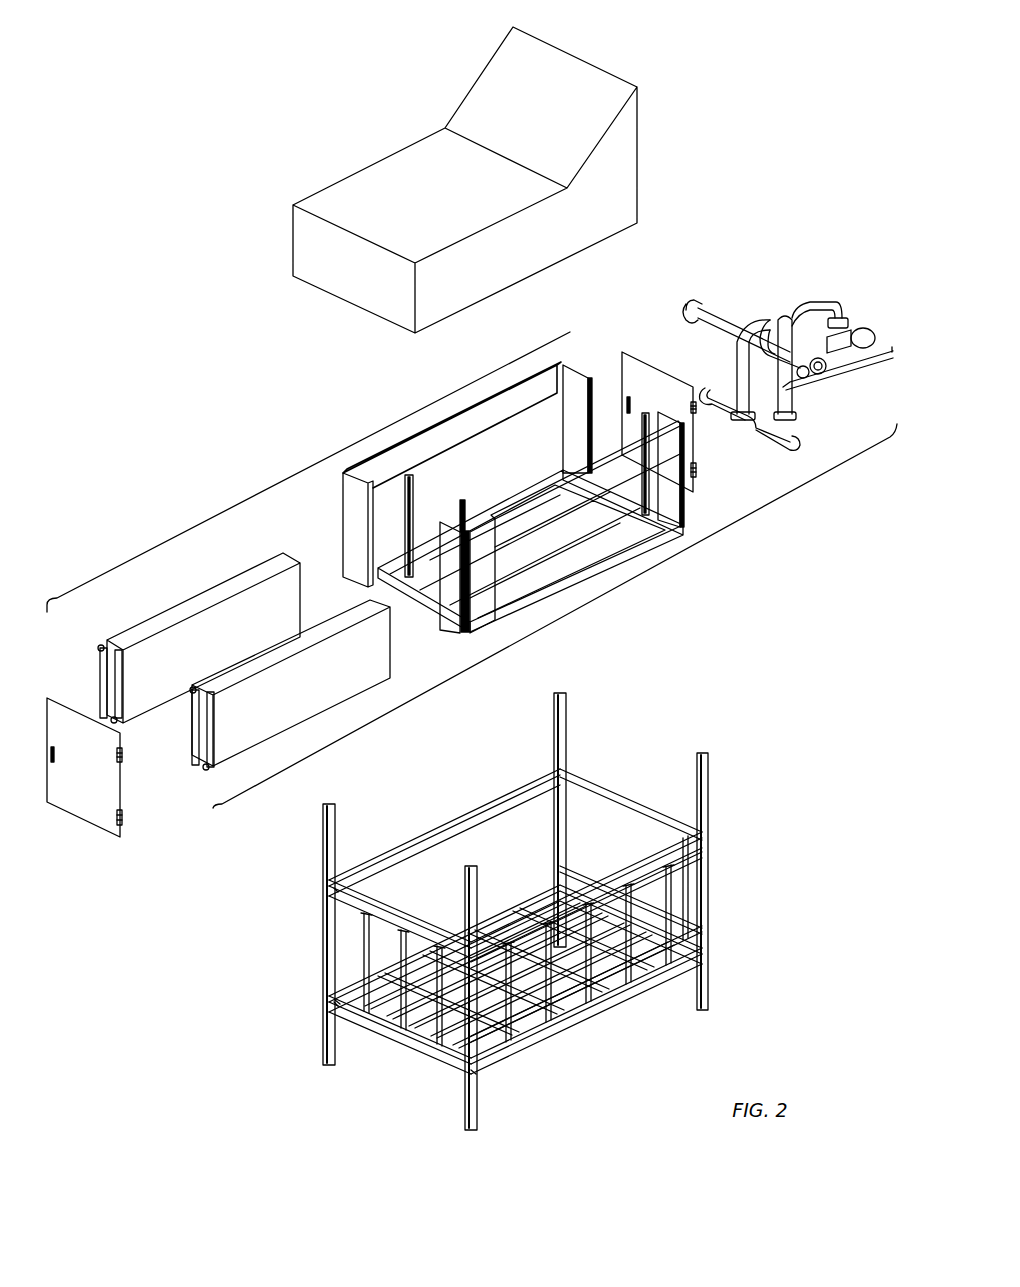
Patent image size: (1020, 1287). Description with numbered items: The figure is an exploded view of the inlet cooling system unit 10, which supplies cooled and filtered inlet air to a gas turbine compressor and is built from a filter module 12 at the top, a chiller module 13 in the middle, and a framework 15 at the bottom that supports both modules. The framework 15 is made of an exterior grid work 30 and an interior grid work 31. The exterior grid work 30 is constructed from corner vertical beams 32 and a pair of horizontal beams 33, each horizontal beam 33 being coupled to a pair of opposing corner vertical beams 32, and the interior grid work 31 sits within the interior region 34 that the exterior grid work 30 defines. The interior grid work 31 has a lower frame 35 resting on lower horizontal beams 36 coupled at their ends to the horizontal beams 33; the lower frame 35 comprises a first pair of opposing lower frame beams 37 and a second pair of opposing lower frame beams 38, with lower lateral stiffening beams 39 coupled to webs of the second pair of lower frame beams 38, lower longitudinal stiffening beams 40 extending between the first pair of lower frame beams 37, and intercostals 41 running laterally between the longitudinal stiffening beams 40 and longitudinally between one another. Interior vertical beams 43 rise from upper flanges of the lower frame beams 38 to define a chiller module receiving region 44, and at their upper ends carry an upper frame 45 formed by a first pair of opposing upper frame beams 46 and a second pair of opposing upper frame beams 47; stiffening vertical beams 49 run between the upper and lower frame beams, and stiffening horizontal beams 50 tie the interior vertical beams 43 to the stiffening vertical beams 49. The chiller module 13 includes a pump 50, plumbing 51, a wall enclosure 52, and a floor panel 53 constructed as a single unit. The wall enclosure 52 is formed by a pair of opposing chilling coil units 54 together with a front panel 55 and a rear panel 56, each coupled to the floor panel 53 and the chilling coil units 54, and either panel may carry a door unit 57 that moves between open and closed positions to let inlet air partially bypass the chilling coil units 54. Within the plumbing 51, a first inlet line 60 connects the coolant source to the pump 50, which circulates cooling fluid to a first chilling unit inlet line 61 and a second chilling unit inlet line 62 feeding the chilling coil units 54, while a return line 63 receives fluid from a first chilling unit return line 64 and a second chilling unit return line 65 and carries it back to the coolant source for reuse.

The inlet cooling system unit 10 is at (757, 127).
The filter module 12 is at (344, 131).
The chiller module 13 is at (580, 620).
The framework 15 is at (742, 788).
The exterior grid work 30 is at (304, 989).
The interior grid work 31 is at (668, 985).
The corner vertical beams 32 is at (322, 852).
The horizontal beams 33 is at (336, 1020).
The interior region 34 is at (514, 786).
The lower frame 35 is at (498, 925).
The lower horizontal beams 36 is at (418, 1075).
The first pair of opposing lower frame beams 37 is at (385, 1060).
The second pair of opposing lower frame beams 38 is at (345, 965).
The lower lateral stiffening beams 39 is at (568, 1055).
The lower longitudinal stiffening beams 40 is at (592, 895).
The intercostals 41 is at (450, 900).
The interior vertical beams 43 is at (364, 905).
The chiller module receiving region 44 is at (538, 803).
The upper frame 45 is at (368, 880).
The first pair of opposing upper frame beams 46 is at (415, 890).
The second pair of opposing upper frame beams 47 is at (598, 860).
The stiffening vertical beams 49 is at (330, 1025).
The pump 50 is at (850, 328).
The plumbing 51 is at (760, 304).
The wall enclosure 52 is at (318, 462).
The floor panel 53 is at (678, 533).
The chilling coil units 54 is at (140, 703).
The front panel 55 is at (452, 632).
The rear panel 56 is at (575, 365).
The door unit 57 is at (85, 810).
The first inlet line 60 is at (758, 430).
The first chilling unit inlet line 61 is at (116, 697).
The second chilling unit inlet line 62 is at (218, 752).
The return line 63 is at (806, 398).
The first chilling unit return line 64 is at (100, 665).
The second chilling unit return line 65 is at (195, 745).